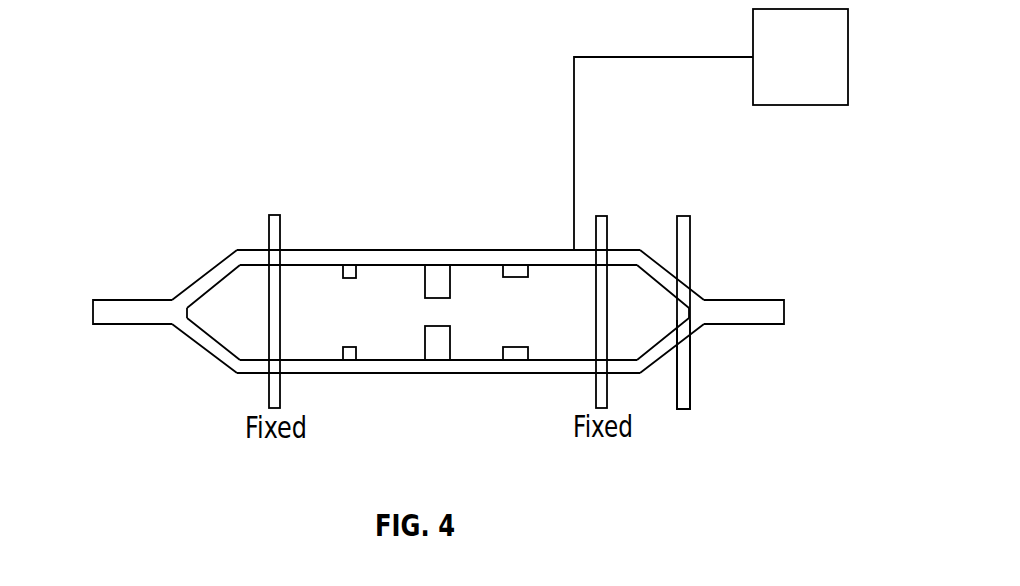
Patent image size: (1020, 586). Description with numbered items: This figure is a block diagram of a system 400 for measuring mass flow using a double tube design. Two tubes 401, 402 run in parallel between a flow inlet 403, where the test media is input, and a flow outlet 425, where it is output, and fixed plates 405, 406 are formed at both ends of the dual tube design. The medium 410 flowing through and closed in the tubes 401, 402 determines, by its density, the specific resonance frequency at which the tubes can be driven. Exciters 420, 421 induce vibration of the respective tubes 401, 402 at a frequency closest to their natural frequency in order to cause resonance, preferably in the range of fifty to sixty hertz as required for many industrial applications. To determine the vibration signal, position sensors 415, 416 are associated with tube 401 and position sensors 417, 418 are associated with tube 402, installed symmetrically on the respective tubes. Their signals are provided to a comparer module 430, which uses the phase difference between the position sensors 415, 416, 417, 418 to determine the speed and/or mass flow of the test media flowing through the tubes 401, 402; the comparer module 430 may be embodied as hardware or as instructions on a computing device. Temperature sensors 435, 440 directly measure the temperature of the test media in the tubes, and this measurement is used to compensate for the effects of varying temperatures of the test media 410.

The system 400 is at (162, 81).
The tube 401 is at (220, 262).
The tube 402 is at (213, 356).
The flow inlet 403 is at (82, 295).
The fixed plate 405 is at (268, 232).
The fixed plate 406 is at (608, 228).
The medium 410 is at (383, 367).
The position sensor 415 is at (350, 272).
The position sensor 416 is at (516, 272).
The position sensor 417 is at (347, 357).
The position sensor 418 is at (515, 352).
The exciter 420 is at (437, 272).
The exciter 421 is at (437, 350).
The flow outlet 425 is at (794, 296).
The comparer module 430 is at (822, 69).
The temperature sensor 435 is at (692, 385).
The temperature sensor 440 is at (692, 250).